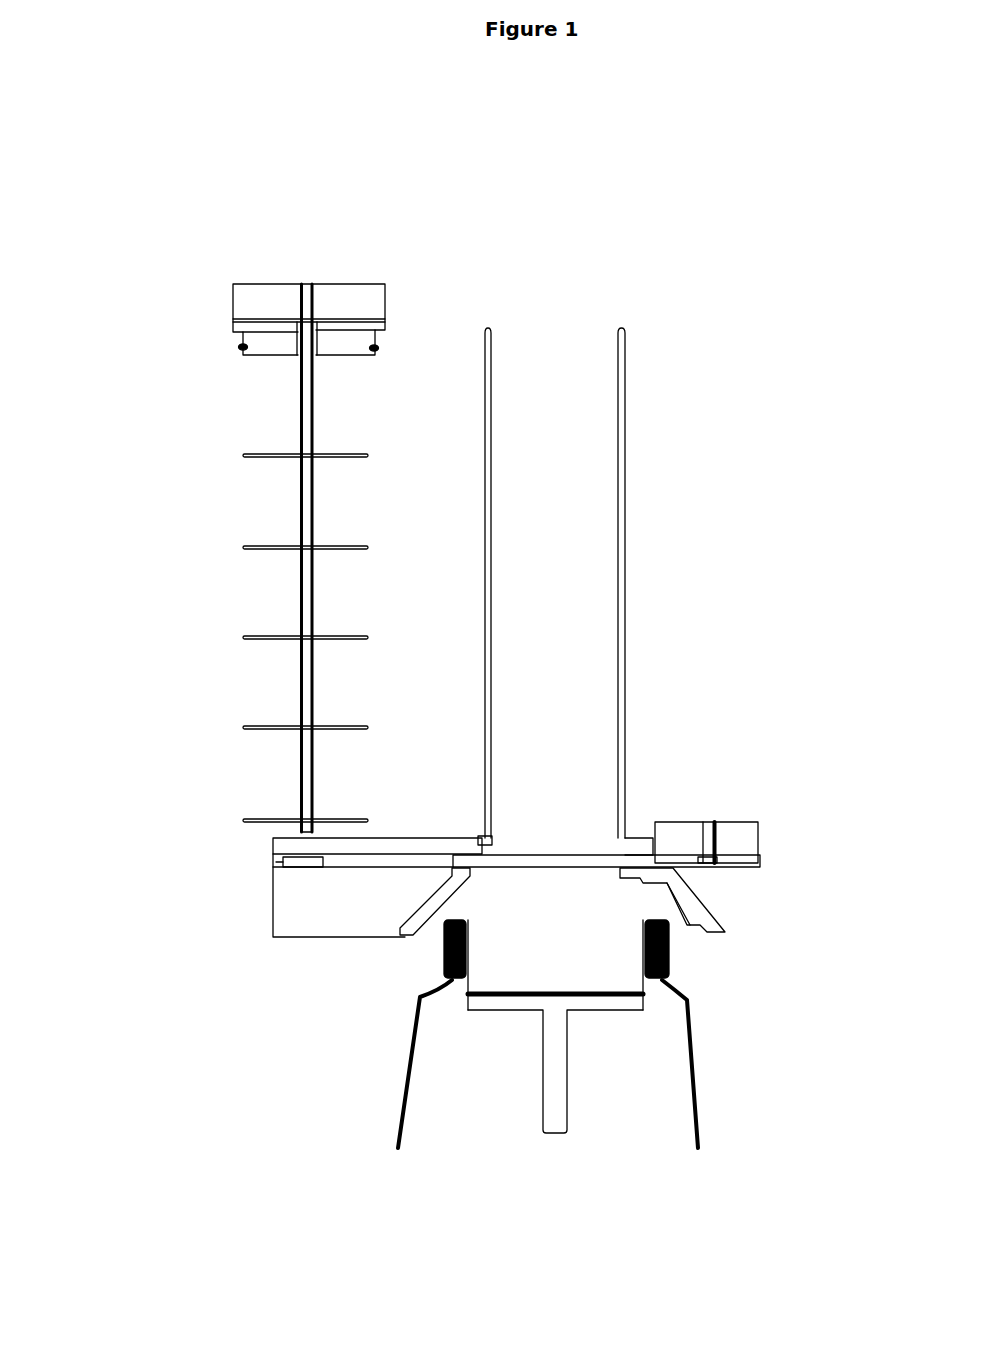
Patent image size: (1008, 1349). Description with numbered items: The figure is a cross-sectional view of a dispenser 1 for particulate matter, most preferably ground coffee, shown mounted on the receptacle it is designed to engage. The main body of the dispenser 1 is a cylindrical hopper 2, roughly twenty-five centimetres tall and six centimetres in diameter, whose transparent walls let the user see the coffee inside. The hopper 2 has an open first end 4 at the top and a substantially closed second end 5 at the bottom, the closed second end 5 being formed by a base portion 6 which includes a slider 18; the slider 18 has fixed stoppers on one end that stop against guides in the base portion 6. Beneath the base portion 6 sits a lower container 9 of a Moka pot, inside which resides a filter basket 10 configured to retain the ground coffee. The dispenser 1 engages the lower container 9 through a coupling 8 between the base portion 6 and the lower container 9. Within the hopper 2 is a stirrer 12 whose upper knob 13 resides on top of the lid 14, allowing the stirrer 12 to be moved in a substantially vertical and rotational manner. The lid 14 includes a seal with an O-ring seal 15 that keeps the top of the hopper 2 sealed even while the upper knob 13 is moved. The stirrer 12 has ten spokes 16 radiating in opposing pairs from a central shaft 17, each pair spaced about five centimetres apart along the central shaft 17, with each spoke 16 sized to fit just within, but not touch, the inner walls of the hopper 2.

The dispenser 1 is at (652, 296).
The hopper 2 is at (630, 532).
The open first end 4 is at (547, 219).
The substantially closed second end 5 is at (548, 825).
The base portion 6 is at (273, 902).
The coupling 8 is at (447, 953).
The lower container 9 is at (405, 1075).
The filter basket 10 is at (552, 950).
The stirrer 12 is at (153, 381).
The upper knob 13 is at (343, 282).
The lid 14 is at (352, 342).
The O-ring seal 15 is at (377, 353).
The spokes 16 is at (243, 545).
The central shaft 17 is at (307, 607).
The slider 18 is at (683, 858).